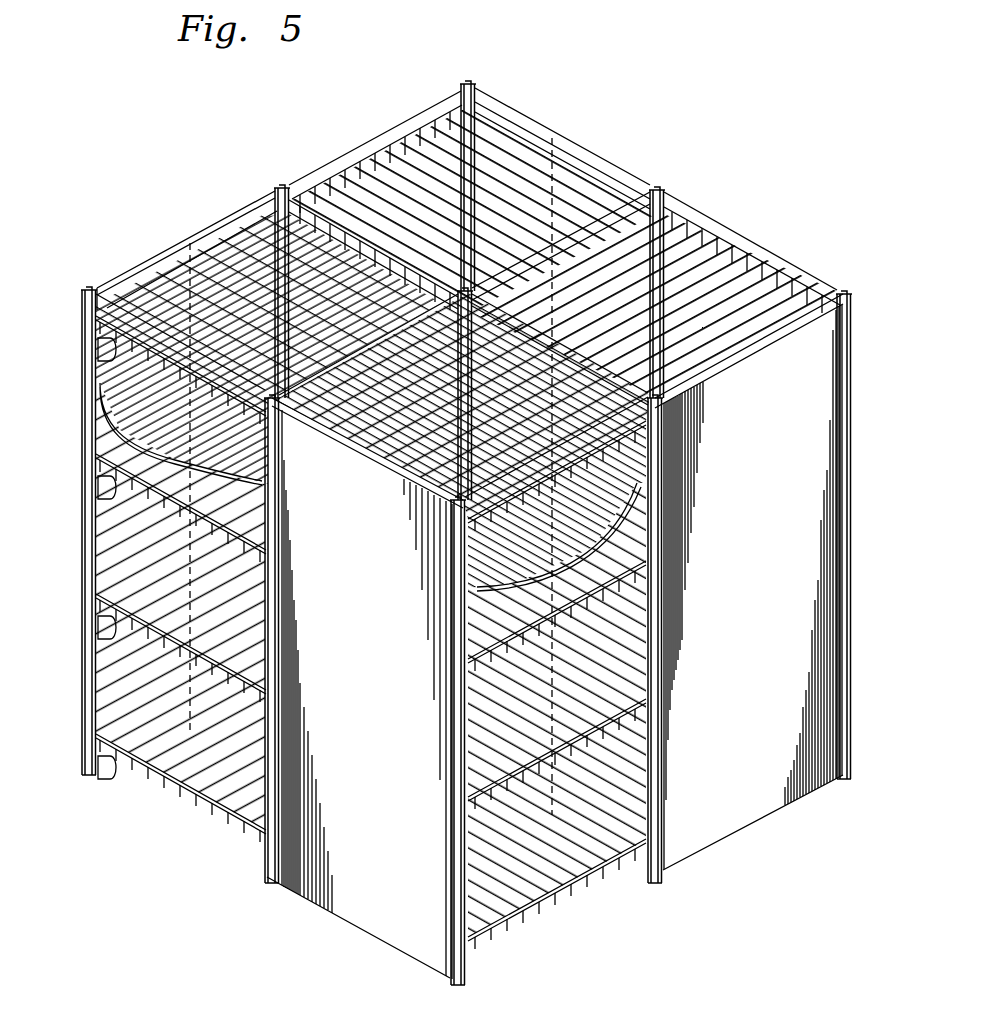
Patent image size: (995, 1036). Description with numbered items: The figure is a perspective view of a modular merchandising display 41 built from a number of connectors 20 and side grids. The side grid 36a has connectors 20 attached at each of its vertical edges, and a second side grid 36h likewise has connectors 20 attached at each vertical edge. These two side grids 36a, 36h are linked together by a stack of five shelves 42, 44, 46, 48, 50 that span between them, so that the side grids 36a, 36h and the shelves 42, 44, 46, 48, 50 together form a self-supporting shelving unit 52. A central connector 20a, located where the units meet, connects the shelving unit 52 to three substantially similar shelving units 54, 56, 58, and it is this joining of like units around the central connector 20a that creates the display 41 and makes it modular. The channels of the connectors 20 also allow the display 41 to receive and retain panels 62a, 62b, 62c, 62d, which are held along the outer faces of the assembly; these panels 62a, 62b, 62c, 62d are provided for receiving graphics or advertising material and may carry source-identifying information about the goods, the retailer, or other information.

The connector 20 is at (474, 82).
The central connector 20a is at (466, 288).
The side grid 36a is at (212, 232).
The side grid 36h is at (307, 415).
The merchandising display 41 is at (570, 47).
The shelf 42 is at (97, 354).
The shelf 44 is at (98, 419).
The shelf 46 is at (98, 493).
The shelf 48 is at (98, 633).
The shelf 50 is at (163, 789).
The shelving unit 52 is at (200, 824).
The shelving unit 54 is at (372, 138).
The shelving unit 56 is at (760, 243).
The shelving unit 58 is at (576, 906).
The panel 62a is at (135, 270).
The panel 62b is at (562, 144).
The panel 62c is at (781, 584).
The panel 62d is at (391, 677).